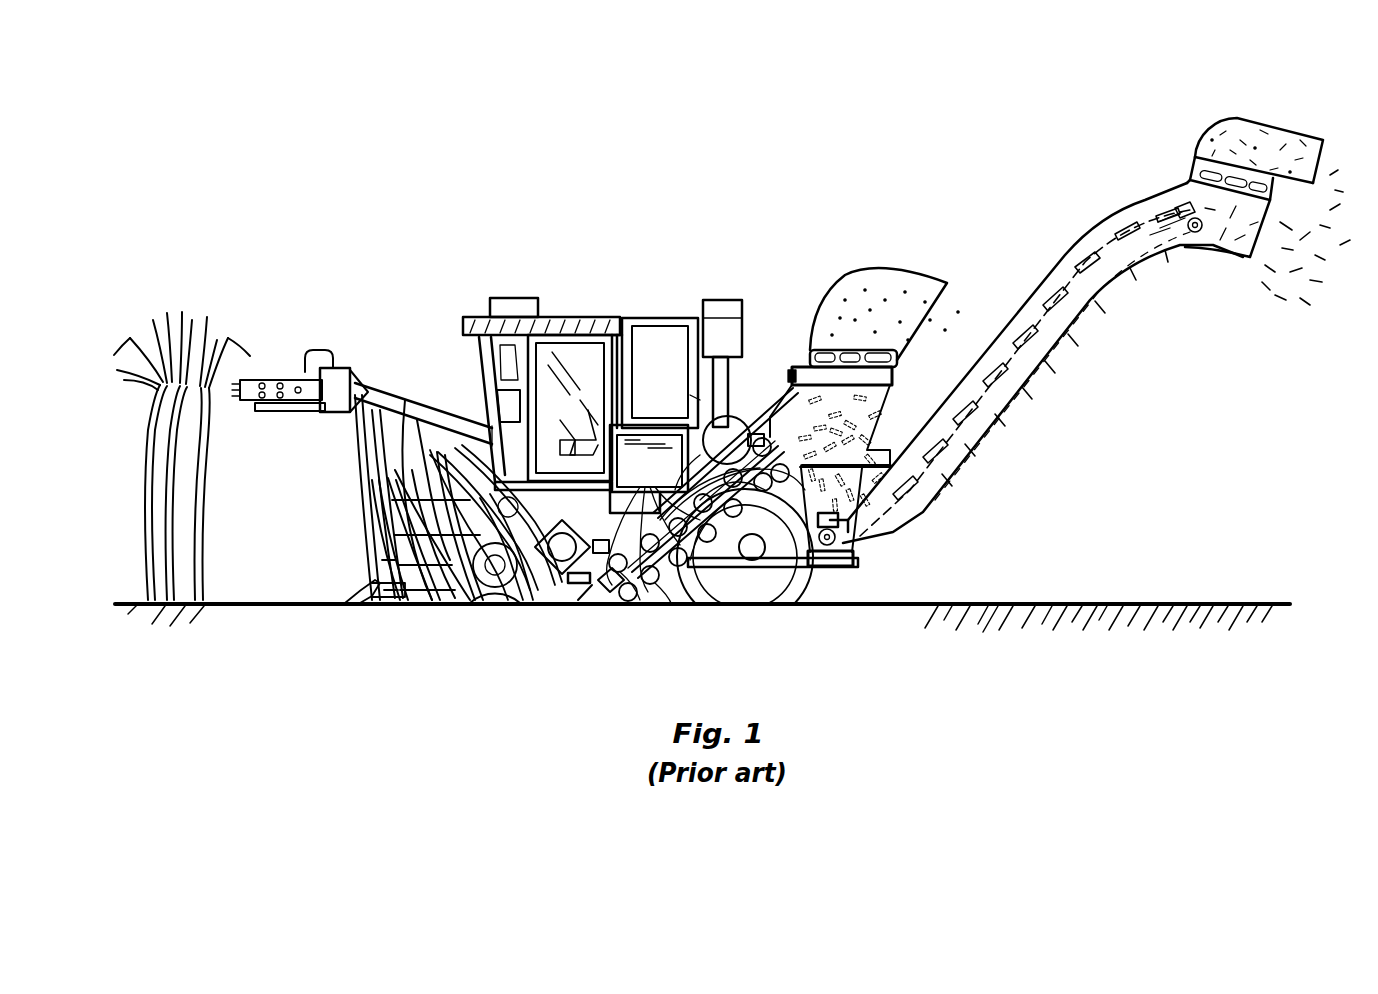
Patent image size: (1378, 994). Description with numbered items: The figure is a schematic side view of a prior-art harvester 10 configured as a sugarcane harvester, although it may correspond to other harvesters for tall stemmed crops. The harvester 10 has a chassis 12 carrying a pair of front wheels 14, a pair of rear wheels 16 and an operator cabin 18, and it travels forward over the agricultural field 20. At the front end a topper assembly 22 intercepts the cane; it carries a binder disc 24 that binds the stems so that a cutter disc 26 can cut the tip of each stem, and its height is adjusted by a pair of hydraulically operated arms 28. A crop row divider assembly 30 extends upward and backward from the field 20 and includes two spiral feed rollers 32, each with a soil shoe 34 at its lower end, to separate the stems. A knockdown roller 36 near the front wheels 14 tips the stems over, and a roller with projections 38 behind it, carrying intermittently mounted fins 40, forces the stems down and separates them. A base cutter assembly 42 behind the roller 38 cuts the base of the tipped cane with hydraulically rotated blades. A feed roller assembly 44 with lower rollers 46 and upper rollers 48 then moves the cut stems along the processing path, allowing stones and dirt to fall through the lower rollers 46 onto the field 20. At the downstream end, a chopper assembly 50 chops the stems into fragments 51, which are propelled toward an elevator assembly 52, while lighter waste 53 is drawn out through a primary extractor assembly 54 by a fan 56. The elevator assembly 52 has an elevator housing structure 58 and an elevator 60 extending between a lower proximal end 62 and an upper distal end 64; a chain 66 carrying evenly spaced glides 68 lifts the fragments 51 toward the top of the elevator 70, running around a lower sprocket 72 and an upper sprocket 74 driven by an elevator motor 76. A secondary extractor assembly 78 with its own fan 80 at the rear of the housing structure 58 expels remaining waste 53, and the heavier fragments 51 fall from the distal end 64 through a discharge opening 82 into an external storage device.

The harvester 10 is at (432, 208).
The chassis 12 is at (572, 527).
The front wheels 14 is at (492, 604).
The rear wheels 16 is at (772, 600).
The operator cabin 18 is at (598, 312).
The agricultural field 20 is at (268, 606).
The topper assembly 22 is at (330, 368).
The binder disc 24 is at (243, 382).
The cutter disc 26 is at (268, 414).
The arms 28 is at (436, 392).
The crop row divider assembly 30 is at (380, 576).
The spiral feed rollers 32 is at (392, 605).
The soil shoe 34 is at (365, 606).
The knockdown roller 36 is at (519, 508).
The roller with projections 38 is at (562, 600).
The fins 40 is at (550, 596).
The base cutter assembly 42 is at (600, 606).
The feed roller assembly 44 is at (678, 590).
The lower rollers 46 is at (630, 605).
The upper rollers 48 is at (653, 508).
The chopper assembly 50 is at (730, 432).
The fragments 51 is at (873, 438).
The elevator assembly 52 is at (1025, 418).
The waste 53 is at (892, 282).
The primary extractor assembly 54 is at (813, 282).
The fan 56 is at (812, 318).
The elevator housing structure 58 is at (1057, 368).
The elevator 60 is at (1043, 317).
The lower proximal end 62 is at (858, 537).
The upper distal end 64 is at (1180, 185).
The chain 66 is at (1085, 358).
The glides 68 is at (1095, 302).
The top of the elevator 70 is at (998, 353).
The lower sprocket 72 is at (843, 550).
The upper sprocket 74 is at (1150, 226).
The elevator motor 76 is at (1165, 215).
The secondary extractor assembly 78 is at (1247, 115).
The fan 80 is at (1213, 168).
The discharge opening 82 is at (1210, 254).